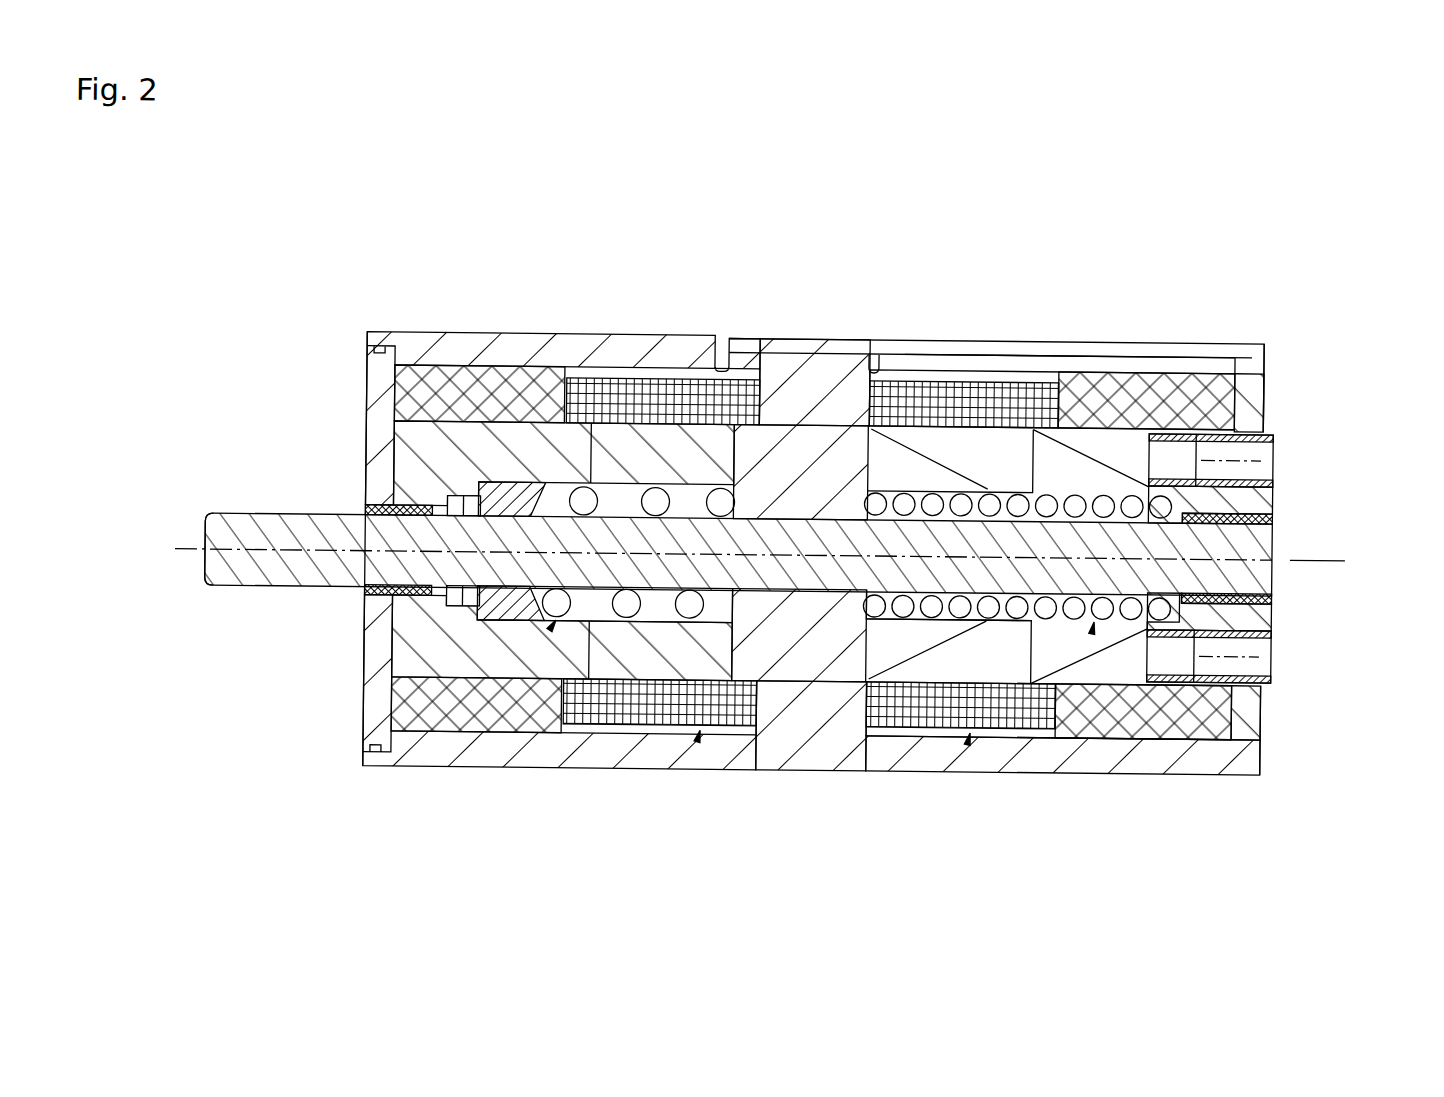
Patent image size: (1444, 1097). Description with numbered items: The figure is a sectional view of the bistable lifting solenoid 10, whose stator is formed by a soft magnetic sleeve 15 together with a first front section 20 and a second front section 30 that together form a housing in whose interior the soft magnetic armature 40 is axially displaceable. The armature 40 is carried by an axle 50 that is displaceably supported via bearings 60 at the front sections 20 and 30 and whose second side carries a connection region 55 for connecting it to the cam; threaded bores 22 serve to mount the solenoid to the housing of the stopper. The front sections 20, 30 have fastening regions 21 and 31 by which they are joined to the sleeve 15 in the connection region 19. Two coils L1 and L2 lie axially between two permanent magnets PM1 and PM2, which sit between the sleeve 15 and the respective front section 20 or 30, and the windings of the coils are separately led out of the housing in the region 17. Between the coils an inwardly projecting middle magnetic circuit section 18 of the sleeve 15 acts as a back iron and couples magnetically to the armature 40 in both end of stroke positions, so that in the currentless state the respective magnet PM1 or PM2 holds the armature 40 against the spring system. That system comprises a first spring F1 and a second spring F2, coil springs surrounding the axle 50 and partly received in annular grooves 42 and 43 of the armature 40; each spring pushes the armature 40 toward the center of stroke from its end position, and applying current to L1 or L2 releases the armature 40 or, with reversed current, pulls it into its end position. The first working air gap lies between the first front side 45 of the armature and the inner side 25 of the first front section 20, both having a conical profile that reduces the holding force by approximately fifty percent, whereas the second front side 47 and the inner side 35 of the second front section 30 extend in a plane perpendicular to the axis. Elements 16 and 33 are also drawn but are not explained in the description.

The damper assembly 10 is at (960, 155).
The soft magnetic sleeve 15 is at (600, 430).
The second coil winding 16 is at (935, 481).
The region 17 is at (760, 473).
The magnetic circuit section 18 is at (822, 368).
The connection region 19 is at (470, 440).
The first front section 20 is at (1252, 490).
The fastening region 21 is at (1251, 387).
The bores 22 is at (1263, 676).
The inner side 25 is at (1118, 386).
The second front section 30 is at (365, 639).
The fastening region 31 is at (528, 494).
The piston collar 33 is at (581, 602).
The inner side 35 is at (585, 470).
The armature 40 is at (812, 482).
The annular groove 42 is at (919, 612).
The annular groove 43 is at (649, 621).
The first front side 45 is at (890, 482).
The second front side 47 is at (637, 444).
The axle 50 is at (262, 592).
The connection region 55 is at (213, 514).
The bearings 60 is at (357, 496).
The permanent magnet PM1 is at (1193, 363).
The permanent magnet PM2 is at (464, 360).
The first spring F1 is at (1095, 614).
The second spring F2 is at (557, 617).
The coil L1 is at (972, 726).
The coil L2 is at (702, 726).